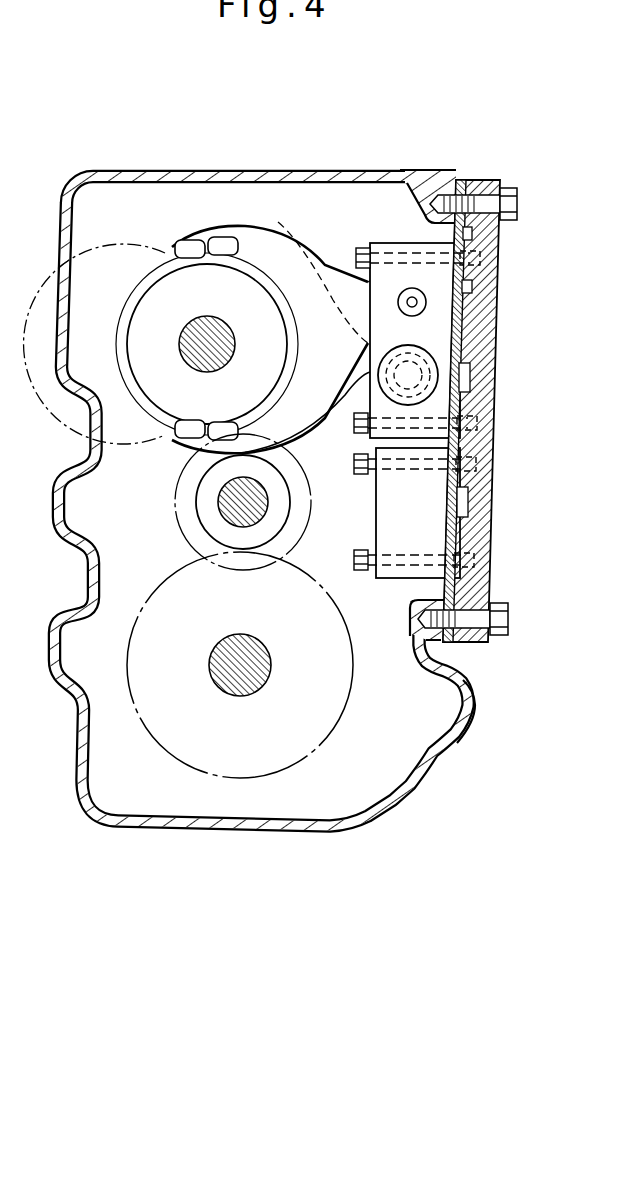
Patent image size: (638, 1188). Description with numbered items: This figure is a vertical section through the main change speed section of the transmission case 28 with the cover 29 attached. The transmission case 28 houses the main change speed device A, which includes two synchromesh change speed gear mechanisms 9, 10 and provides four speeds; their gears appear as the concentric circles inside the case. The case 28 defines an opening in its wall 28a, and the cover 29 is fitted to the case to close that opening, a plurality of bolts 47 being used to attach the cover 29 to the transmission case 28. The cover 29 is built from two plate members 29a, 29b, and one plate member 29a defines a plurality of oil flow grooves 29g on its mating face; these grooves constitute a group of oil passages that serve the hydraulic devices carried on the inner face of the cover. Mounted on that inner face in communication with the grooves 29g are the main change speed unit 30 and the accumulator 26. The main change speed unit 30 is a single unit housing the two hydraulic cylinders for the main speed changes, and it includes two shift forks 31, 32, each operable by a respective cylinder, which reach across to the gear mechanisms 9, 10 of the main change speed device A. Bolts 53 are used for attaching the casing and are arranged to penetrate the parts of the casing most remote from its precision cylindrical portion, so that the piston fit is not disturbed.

The transmission case 28 is at (187, 163).
The wall 28a is at (477, 700).
The synchromesh change speed gear mechanism 10 is at (161, 328).
The synchromesh change speed gear mechanism 9 is at (140, 300).
The shift fork 32 is at (236, 228).
The shift fork 31 is at (347, 288).
The main change speed unit 30 is at (362, 385).
The main change speed device A is at (158, 476).
The accumulator 26 is at (395, 578).
The cover 29 is at (496, 364).
The plate member 29a is at (490, 180).
The plate member 29b is at (440, 379).
The oil flow grooves 29g is at (472, 287).
The bolts 53 is at (357, 256).
The bolts 47 is at (518, 193).